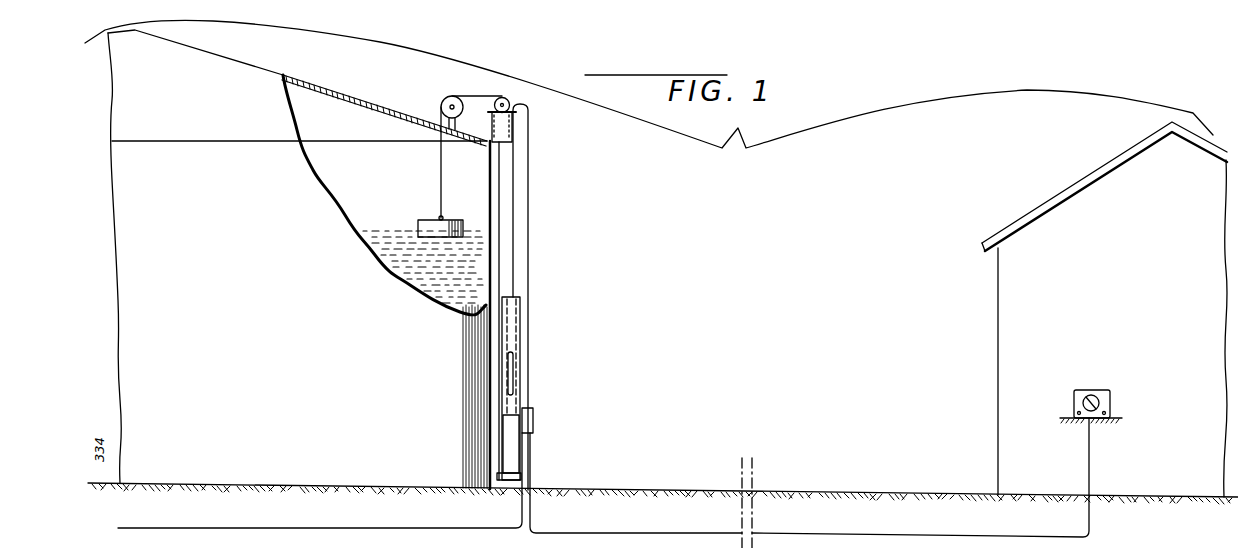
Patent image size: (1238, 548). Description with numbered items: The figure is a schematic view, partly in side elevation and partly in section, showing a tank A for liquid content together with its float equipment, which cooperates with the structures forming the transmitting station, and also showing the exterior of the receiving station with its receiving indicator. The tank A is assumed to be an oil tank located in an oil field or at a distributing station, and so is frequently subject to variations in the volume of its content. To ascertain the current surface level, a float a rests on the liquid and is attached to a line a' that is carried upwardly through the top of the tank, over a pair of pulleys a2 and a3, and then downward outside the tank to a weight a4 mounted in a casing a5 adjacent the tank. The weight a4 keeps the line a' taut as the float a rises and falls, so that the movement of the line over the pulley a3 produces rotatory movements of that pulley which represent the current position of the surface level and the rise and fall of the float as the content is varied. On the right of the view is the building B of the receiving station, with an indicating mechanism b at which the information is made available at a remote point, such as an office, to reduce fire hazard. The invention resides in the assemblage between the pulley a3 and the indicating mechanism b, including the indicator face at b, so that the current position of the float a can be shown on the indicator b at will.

The tank A is at (299, 259).
The building B is at (1104, 309).
The float a is at (433, 172).
The line a' is at (510, 280).
The pulley a2 is at (442, 101).
The pulley a3 is at (515, 103).
The weight a4 is at (511, 375).
The casing a5 is at (522, 337).
The indicating mechanism b is at (1111, 406).